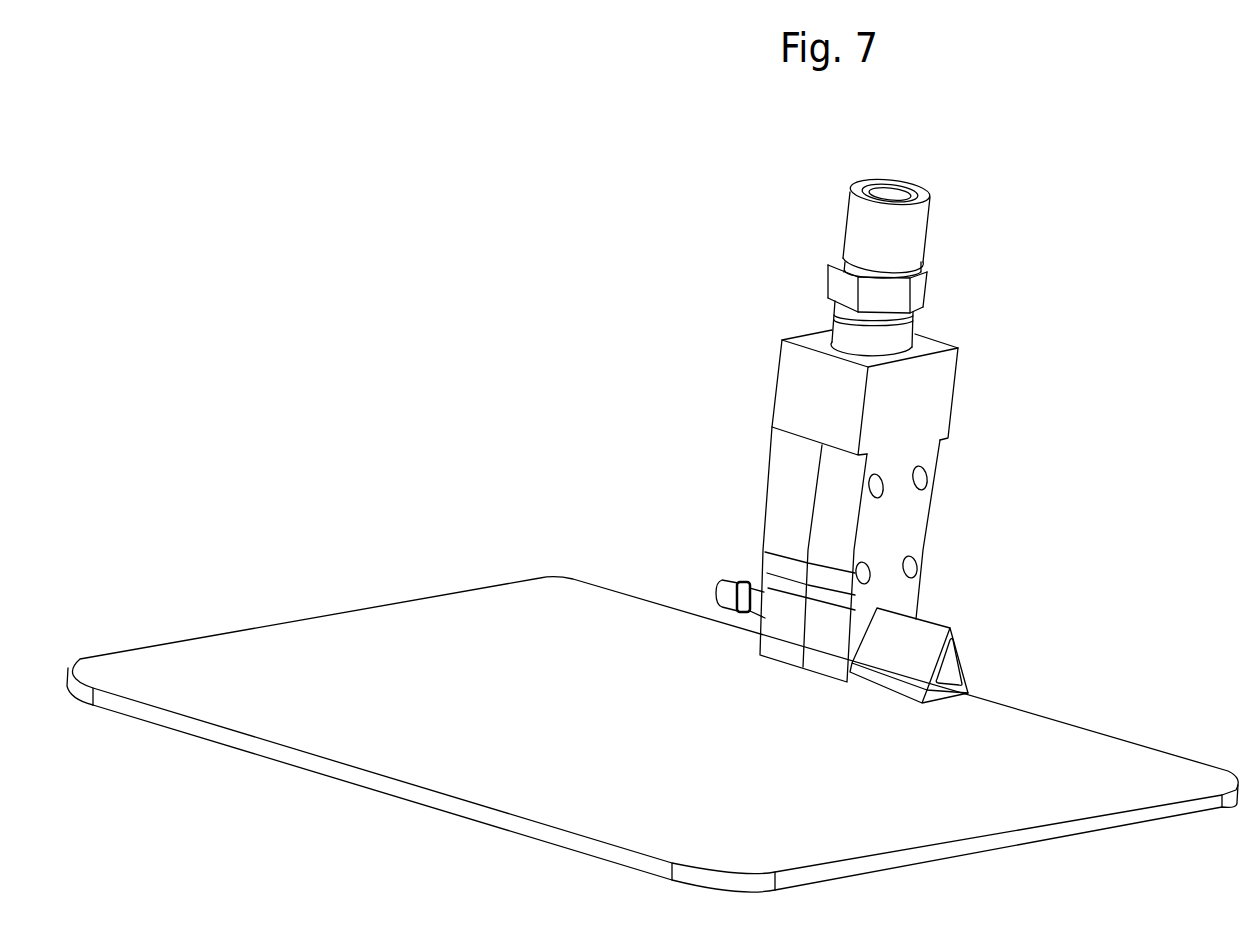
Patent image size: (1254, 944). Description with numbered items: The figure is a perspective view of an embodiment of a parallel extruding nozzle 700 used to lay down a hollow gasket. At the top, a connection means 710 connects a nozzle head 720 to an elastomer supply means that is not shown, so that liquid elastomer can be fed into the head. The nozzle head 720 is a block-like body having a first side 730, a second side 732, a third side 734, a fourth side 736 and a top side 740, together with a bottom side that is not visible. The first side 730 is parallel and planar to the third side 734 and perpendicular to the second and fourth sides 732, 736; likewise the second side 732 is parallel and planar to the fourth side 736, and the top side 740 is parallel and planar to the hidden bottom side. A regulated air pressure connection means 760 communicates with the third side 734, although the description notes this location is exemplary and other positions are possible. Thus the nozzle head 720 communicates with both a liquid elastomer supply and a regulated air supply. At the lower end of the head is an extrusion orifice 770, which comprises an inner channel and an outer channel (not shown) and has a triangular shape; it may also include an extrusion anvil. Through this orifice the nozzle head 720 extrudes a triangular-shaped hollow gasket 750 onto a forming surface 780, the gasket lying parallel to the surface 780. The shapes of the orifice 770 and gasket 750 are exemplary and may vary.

The parallel extruding nozzle 700 is at (895, 391).
The connection means 710 is at (842, 287).
The nozzle head 720 is at (872, 287).
The first side 730 is at (953, 412).
The second side 732 is at (822, 397).
The third side 734 is at (823, 333).
The fourth side 736 is at (907, 397).
The top side 740 is at (927, 348).
The hollow gasket 750 is at (947, 622).
The regulated air pressure connection means 760 is at (717, 588).
The extrusion orifice 770 is at (993, 602).
The forming surface 780 is at (1053, 760).